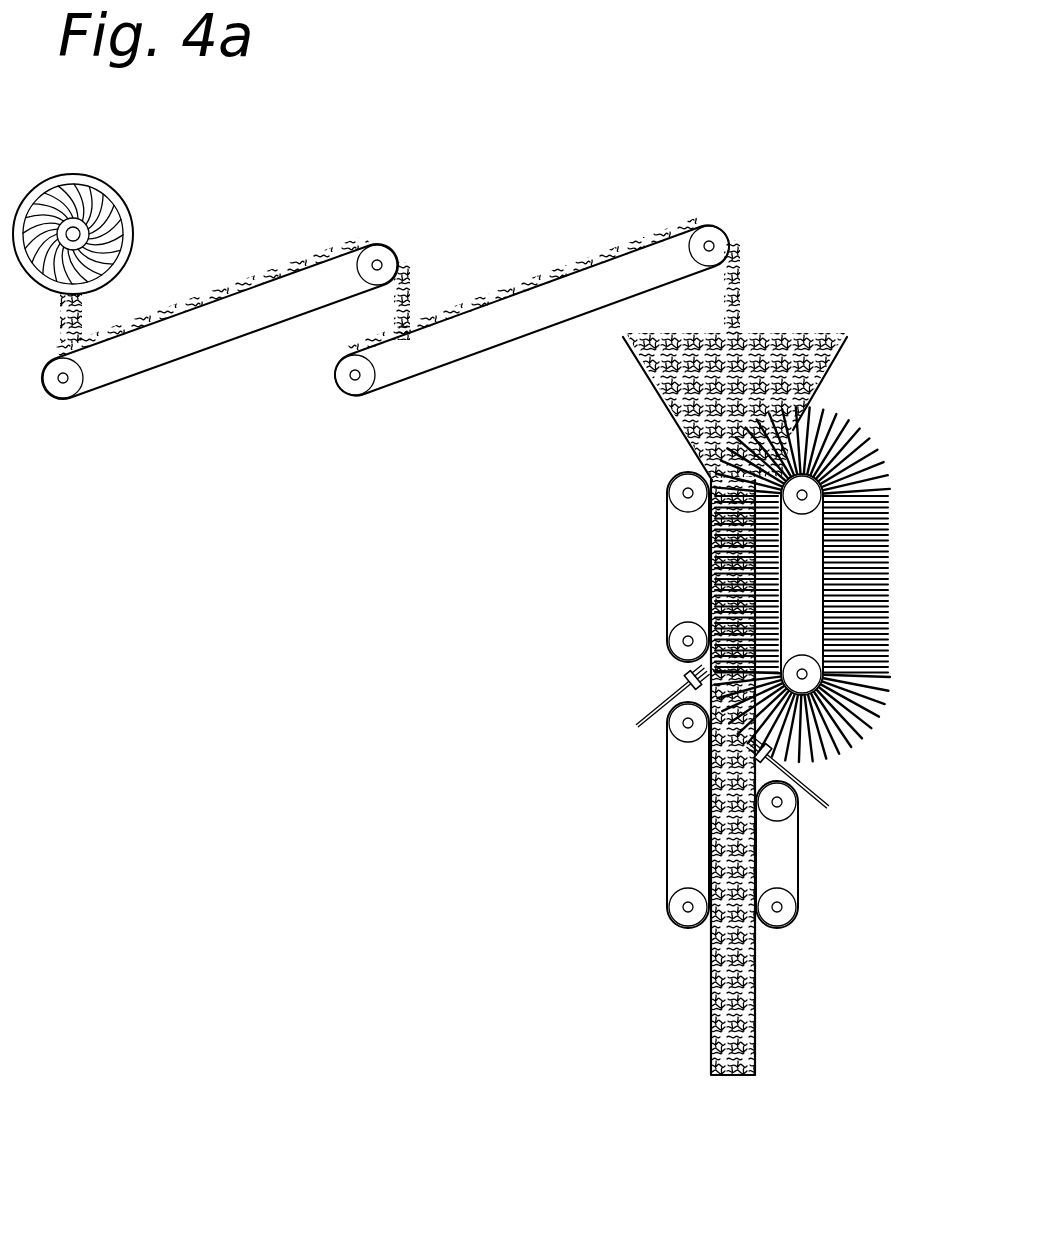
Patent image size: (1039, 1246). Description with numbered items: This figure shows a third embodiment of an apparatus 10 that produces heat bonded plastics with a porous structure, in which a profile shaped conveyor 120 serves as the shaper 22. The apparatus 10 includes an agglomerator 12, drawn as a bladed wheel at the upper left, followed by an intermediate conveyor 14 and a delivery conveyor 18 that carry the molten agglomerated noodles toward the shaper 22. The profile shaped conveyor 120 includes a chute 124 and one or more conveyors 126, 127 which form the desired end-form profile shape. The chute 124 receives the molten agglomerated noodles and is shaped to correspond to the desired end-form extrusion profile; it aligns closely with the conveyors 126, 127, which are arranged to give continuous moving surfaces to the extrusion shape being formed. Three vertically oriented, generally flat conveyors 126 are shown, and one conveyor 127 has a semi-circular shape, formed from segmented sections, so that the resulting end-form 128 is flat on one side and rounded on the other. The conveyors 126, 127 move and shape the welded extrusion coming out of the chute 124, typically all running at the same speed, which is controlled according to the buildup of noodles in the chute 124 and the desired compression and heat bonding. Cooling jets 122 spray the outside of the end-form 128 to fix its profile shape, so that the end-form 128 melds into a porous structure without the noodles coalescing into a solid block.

The apparatus 10 is at (538, 148).
The agglomerator 12 is at (140, 194).
The intermediate conveyor 14 is at (231, 352).
The delivery conveyor 18 is at (455, 378).
The shaper 22 is at (634, 697).
The profile shaped conveyor 120 is at (662, 560).
The cooling jets 122 is at (647, 722).
The chute 124 is at (656, 417).
The conveyors 126 is at (667, 603).
The conveyor 127 is at (887, 510).
The end-form 128 is at (756, 1018).